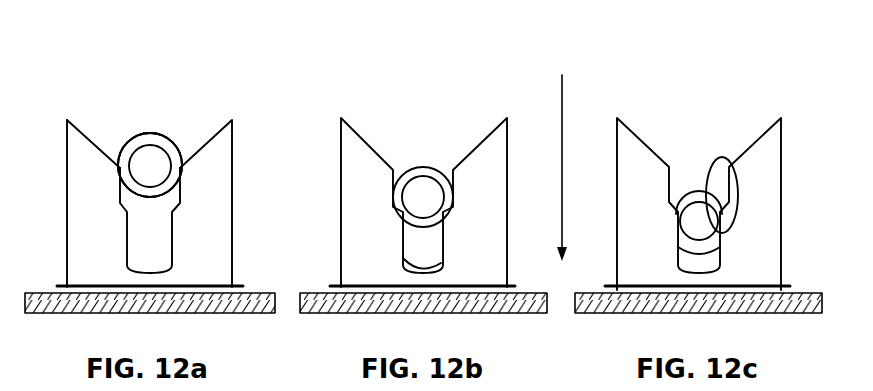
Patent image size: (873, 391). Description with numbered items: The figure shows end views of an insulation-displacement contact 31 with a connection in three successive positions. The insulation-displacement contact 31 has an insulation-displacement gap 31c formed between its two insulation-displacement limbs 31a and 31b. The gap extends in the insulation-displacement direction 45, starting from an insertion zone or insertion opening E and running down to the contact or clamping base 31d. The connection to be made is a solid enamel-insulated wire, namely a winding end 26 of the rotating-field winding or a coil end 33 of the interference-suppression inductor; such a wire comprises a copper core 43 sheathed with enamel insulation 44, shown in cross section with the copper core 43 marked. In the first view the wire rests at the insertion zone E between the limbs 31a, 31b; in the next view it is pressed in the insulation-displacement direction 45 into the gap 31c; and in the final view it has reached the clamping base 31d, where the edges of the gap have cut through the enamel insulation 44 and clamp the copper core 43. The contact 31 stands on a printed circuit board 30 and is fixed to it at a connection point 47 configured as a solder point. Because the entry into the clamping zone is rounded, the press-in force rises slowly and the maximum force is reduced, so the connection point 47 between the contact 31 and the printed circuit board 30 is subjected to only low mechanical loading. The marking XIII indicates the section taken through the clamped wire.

In FIG. 12a, the insulation-displacement contact 31 is at (190, 152).
In FIG. 12b, the insulation-displacement contact 31 is at (396, 152).
In FIG. 12c, the insulation-displacement contact 31 is at (763, 120).
In FIG. 12a, the insulation-displacement limb 31a is at (78, 135).
In FIG. 12a, the insulation-displacement limb 31b is at (222, 150).
In FIG. 12a, the insulation-displacement gap 31c is at (158, 233).
In FIG. 12b, the contact or clamping base 31d is at (418, 266).
In FIG. 12a, the printed circuit board 30 is at (43, 295).
In FIG. 12b, the printed circuit board 30 is at (423, 303).
In FIG. 12c, the printed circuit board 30 is at (698, 303).
In FIG. 12a, the connection point 47 is at (235, 286).
In FIG. 12a, the winding end 26 is at (167, 135).
In FIG. 12b, the winding end 26 is at (423, 197).
In FIG. 12c, the winding end 26 is at (699, 222).
In FIG. 12a, the coil end 33 is at (178, 132).
In FIG. 12a, the copper core 43 is at (153, 150).
In FIG. 12a, the enamel insulation 44 is at (132, 145).
In FIG. 12b, the insulation-displacement direction 45 is at (563, 153).
In FIG. 12b, the insertion zone E is at (402, 163).
In FIG. 12c, the section line XIII is at (742, 198).